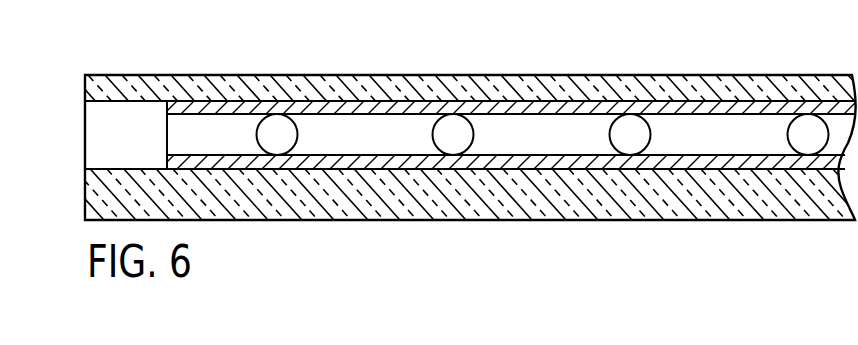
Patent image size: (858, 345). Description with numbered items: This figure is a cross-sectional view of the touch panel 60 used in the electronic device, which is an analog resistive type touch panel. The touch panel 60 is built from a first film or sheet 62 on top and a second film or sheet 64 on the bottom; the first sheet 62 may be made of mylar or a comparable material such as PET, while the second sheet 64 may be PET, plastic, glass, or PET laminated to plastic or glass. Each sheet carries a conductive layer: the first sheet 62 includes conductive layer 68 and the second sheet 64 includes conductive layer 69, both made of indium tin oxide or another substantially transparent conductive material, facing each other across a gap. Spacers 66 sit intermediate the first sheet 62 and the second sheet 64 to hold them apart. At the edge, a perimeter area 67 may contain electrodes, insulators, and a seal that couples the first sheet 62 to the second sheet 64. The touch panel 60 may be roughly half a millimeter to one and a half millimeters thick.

The touch panel 60 is at (84, 185).
The first film or sheet 62 is at (790, 82).
The second film or sheet 64 is at (330, 213).
The spacers 66 is at (808, 142).
The perimeter area 67 is at (100, 142).
The conductive layer 68 is at (400, 106).
The conductive layer 69 is at (575, 162).